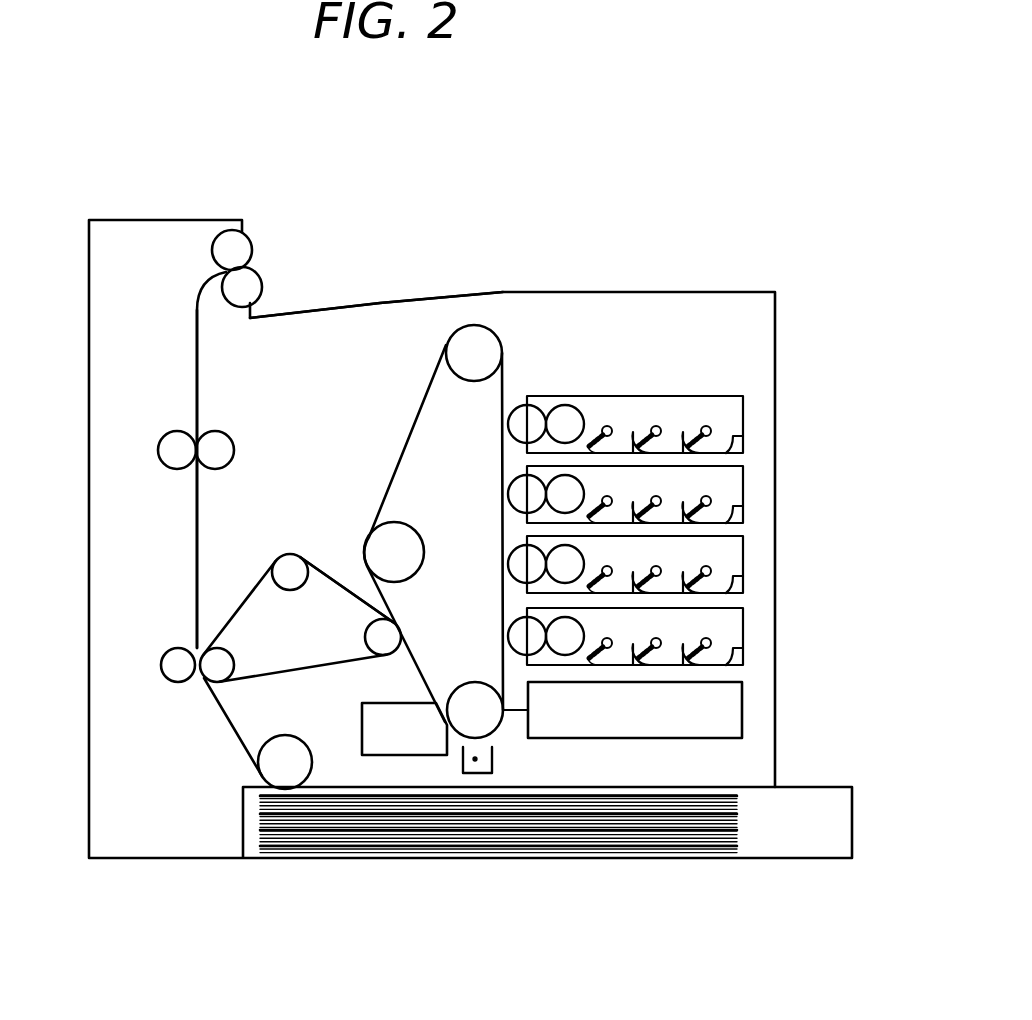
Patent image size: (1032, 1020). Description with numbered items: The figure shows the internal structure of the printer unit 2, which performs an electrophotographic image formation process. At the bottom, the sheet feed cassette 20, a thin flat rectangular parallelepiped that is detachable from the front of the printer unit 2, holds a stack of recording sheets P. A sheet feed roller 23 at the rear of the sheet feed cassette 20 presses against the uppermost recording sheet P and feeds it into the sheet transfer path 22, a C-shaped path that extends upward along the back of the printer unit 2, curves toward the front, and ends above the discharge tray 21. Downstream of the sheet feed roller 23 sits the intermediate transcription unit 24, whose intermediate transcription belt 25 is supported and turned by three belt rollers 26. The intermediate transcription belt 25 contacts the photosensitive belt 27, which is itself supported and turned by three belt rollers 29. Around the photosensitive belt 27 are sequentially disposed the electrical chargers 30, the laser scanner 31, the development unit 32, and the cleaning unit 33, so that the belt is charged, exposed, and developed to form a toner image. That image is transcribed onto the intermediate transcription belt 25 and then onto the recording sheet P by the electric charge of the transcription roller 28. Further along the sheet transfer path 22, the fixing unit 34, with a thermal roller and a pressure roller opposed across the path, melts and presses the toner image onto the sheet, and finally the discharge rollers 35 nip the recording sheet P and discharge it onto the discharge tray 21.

The printer unit 2 is at (177, 945).
The sheet feed cassette 20 is at (815, 787).
The recording sheets P is at (630, 789).
The discharge tray 21 is at (383, 300).
The sheet transfer path 22 is at (197, 549).
The sheet feed roller 23 is at (258, 771).
The intermediate transcription unit 24 is at (282, 530).
The intermediate transcription belt 25 is at (341, 578).
The belt rollers 26 is at (366, 640).
The photosensitive belt 27 is at (418, 407).
The transcription roller 28 is at (161, 665).
The belt rollers 29 is at (473, 682).
The electrical chargers 30 is at (492, 762).
The laser scanner 31 is at (745, 703).
The development unit 32 is at (727, 380).
The cleaning unit 33 is at (360, 733).
The fixing unit 34 is at (182, 428).
The discharge rollers 35 is at (260, 278).